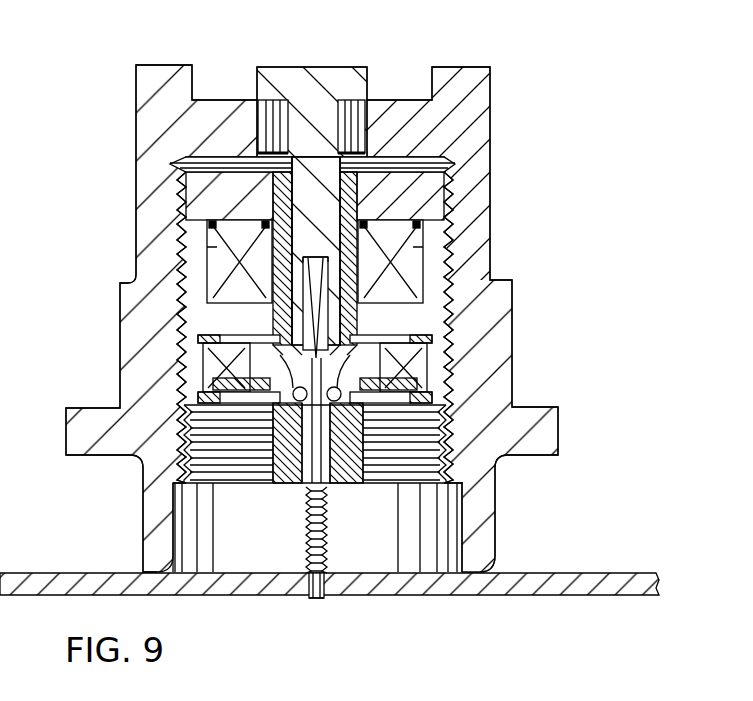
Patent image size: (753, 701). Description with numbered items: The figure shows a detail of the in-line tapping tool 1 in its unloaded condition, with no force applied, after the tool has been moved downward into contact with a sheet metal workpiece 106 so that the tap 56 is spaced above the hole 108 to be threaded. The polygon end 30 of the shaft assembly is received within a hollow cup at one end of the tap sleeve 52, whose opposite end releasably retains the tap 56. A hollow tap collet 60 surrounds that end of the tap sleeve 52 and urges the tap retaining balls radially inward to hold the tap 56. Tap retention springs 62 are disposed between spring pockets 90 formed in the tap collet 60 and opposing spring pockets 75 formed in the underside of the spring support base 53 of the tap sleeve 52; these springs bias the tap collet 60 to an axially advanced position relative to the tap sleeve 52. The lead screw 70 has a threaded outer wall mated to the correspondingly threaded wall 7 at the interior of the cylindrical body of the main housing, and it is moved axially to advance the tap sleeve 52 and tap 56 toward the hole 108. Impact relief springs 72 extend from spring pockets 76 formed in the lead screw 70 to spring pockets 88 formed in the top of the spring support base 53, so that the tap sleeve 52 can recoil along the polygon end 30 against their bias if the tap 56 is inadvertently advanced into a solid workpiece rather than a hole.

The in-line tapping tool 1 is at (520, 120).
The threaded wall 7 is at (452, 462).
The polygon end 30 is at (342, 67).
The tap sleeve 52 is at (232, 165).
The spring support base 53 is at (215, 338).
The tap 56 is at (301, 518).
The tap collet 60 is at (282, 486).
The tap retention springs 62 is at (385, 368).
The lead screw 70 is at (443, 235).
The impact relief springs 72 is at (215, 257).
The spring pockets 75 is at (430, 330).
The spring pockets 76 is at (180, 170).
The spring pockets 88 is at (245, 297).
The spring pockets 90 is at (440, 420).
The sheet metal workpiece 106 is at (561, 573).
The hole 108 is at (320, 599).